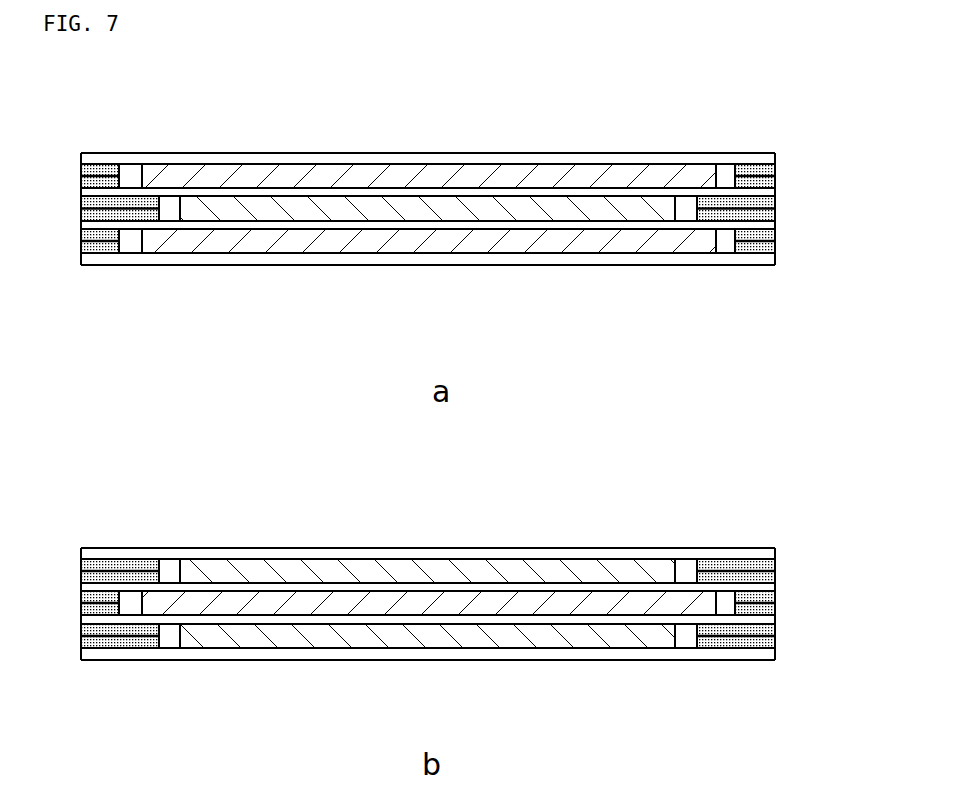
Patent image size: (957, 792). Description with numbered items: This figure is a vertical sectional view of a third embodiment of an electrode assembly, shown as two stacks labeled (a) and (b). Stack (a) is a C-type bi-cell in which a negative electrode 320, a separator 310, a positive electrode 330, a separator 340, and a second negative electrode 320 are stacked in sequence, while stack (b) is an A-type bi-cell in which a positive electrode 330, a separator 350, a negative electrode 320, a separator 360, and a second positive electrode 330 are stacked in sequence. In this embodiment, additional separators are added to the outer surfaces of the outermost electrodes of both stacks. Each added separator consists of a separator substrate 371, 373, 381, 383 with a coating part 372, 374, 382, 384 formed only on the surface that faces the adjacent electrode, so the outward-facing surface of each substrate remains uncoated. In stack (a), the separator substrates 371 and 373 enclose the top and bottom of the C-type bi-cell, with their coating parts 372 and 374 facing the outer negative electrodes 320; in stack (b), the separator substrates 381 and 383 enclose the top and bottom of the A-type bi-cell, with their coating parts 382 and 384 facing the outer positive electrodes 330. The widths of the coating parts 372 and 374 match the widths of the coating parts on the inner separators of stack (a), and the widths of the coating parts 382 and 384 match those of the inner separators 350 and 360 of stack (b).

The separator 310 is at (807, 173).
The negative electrode 320 is at (622, 180).
The positive electrode 330 is at (534, 208).
The separator 340 is at (788, 208).
The separator 350 is at (807, 568).
The separator 360 is at (788, 603).
The separator substrate 371 is at (746, 161).
The coating part 372 is at (776, 154).
The separator substrate 373 is at (745, 256).
The coating part 374 is at (770, 267).
The separator substrate 381 is at (746, 556).
The coating part 382 is at (776, 549).
The separator substrate 383 is at (745, 651).
The coating part 384 is at (770, 662).